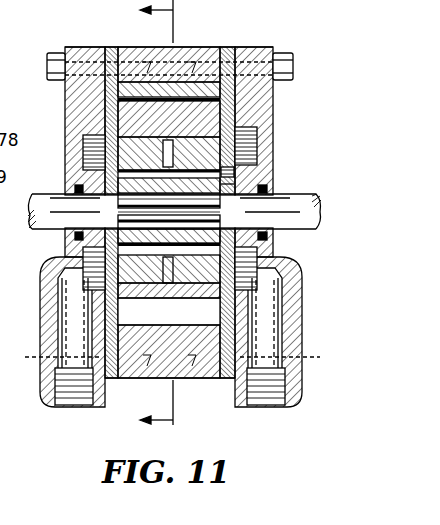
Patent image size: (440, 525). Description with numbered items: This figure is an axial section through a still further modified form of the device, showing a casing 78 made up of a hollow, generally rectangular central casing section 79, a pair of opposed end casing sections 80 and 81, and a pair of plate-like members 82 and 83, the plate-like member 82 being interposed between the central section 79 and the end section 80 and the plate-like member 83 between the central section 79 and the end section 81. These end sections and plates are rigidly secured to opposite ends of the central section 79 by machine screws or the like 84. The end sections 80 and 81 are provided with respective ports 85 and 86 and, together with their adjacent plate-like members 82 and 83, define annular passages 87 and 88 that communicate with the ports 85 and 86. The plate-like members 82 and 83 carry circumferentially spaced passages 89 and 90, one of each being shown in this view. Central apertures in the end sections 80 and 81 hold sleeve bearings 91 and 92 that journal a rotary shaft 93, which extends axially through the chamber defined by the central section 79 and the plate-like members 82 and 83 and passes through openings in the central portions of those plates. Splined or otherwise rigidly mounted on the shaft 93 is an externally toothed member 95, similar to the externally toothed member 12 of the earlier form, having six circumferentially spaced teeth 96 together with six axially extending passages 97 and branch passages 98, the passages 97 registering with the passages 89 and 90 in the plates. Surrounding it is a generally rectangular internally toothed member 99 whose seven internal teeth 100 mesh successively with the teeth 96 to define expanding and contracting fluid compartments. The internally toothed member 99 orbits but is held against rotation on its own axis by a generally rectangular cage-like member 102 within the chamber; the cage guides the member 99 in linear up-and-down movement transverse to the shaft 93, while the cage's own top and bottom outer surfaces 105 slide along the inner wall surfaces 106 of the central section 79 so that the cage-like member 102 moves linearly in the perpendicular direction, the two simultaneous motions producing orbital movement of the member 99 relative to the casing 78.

The externally toothed member 12 is at (135, 216).
The casing 78 is at (226, 37).
The central casing section 79 is at (213, 46).
The end casing section 80 is at (275, 110).
The end casing section 81 is at (73, 97).
The plate-like member 82 is at (252, 46).
The plate-like member 83 is at (112, 50).
The machine screws 84 is at (47, 65).
The port 85 is at (264, 406).
The port 86 is at (70, 406).
The annular passage 87 is at (257, 135).
The annular passage 88 is at (83, 137).
The passages 89 is at (236, 175).
The passages 90 is at (107, 253).
The sleeve bearing 91 is at (232, 184).
The sleeve bearing 92 is at (85, 186).
The rotary shaft 93 is at (308, 198).
The externally toothed member 95 is at (267, 103).
The teeth 96 is at (160, 305).
The axially extending passages 97 is at (118, 171).
The branch passages 98 is at (190, 305).
The internally toothed member 99 is at (132, 117).
The internal teeth 100 is at (233, 108).
The cage-like member 102 is at (163, 345).
The top and bottom outer surfaces 105 is at (174, 83).
The inner wall surfaces 106 is at (150, 84).